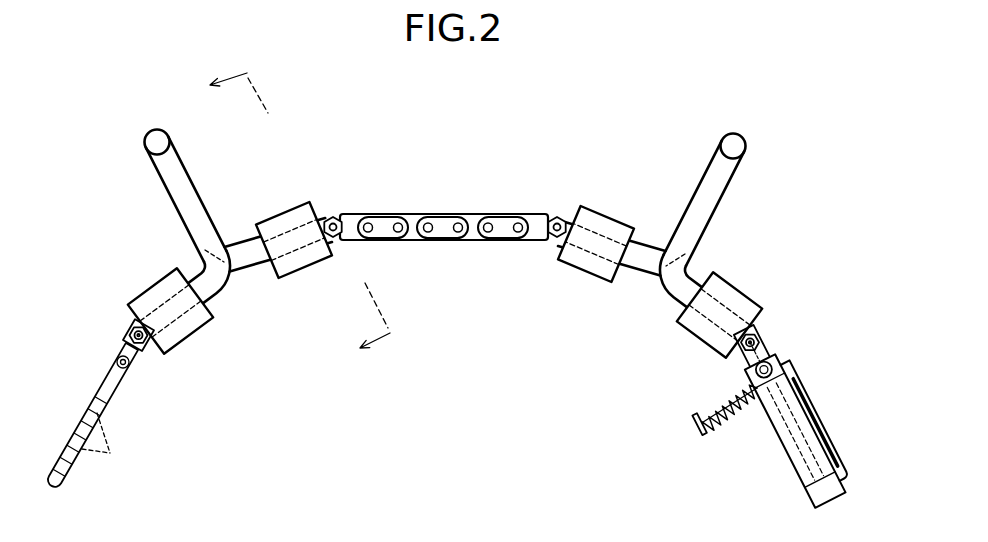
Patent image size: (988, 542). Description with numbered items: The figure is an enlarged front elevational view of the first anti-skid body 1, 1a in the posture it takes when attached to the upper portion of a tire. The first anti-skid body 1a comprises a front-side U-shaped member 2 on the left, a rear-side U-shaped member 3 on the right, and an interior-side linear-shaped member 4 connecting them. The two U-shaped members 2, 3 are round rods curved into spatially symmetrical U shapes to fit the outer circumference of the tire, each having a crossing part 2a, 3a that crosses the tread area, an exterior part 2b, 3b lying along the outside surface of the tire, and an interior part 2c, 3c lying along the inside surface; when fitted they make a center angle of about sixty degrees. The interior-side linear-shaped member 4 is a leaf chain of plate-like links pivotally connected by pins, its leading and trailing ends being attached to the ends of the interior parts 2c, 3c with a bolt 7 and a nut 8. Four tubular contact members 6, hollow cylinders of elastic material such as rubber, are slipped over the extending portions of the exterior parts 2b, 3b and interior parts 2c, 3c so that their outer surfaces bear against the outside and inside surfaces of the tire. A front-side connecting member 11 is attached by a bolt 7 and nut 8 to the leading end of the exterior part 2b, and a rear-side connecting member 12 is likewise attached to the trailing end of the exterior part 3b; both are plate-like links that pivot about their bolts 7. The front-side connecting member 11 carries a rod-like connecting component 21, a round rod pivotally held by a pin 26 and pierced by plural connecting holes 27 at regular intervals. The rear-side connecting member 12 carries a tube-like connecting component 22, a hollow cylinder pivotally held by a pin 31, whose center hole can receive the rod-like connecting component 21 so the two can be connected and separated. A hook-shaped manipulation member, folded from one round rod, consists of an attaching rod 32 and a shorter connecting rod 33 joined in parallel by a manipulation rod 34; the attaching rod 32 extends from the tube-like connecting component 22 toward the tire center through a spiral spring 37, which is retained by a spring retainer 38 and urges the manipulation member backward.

The first anti-skid body 1 is at (447, 132).
The first anti-skid body 1a is at (452, 291).
The front-side U-shaped member 2 is at (186, 114).
The crossing part 2a is at (171, 140).
The exterior part 2b is at (197, 273).
The interior part 2c is at (247, 271).
The rear-side U-shaped member 3 is at (712, 120).
The crossing part 3a is at (718, 145).
The exterior part 3b is at (688, 278).
The interior part 3c is at (643, 277).
The interior-side linear-shaped member 4 is at (473, 215).
The contact member 6 is at (280, 210).
The bolt 7 is at (333, 214).
The nut 8 is at (135, 352).
The front-side connecting member 11 is at (127, 340).
The rear-side connecting member 12 is at (755, 346).
The rod-like connecting component 21 is at (112, 403).
The tube-like connecting component 22 is at (783, 442).
The pin 26 is at (116, 362).
The connecting hole 27 is at (113, 451).
The pin 31 is at (775, 367).
The attaching rod 32 is at (693, 423).
The connecting rod 33 is at (817, 492).
The manipulation rod 34 is at (803, 387).
The spiral spring 37 is at (733, 423).
The spring retainer 38 is at (707, 435).